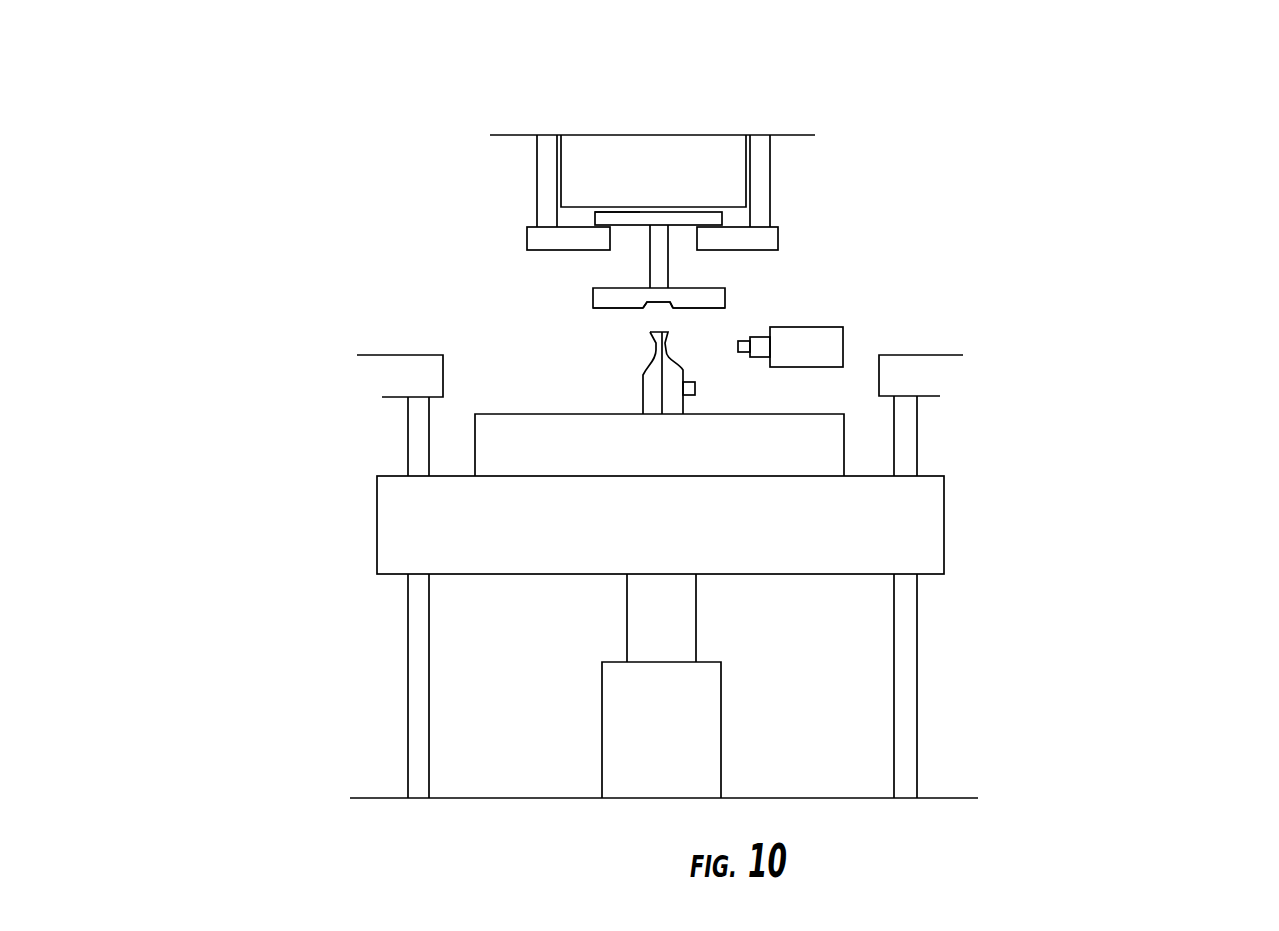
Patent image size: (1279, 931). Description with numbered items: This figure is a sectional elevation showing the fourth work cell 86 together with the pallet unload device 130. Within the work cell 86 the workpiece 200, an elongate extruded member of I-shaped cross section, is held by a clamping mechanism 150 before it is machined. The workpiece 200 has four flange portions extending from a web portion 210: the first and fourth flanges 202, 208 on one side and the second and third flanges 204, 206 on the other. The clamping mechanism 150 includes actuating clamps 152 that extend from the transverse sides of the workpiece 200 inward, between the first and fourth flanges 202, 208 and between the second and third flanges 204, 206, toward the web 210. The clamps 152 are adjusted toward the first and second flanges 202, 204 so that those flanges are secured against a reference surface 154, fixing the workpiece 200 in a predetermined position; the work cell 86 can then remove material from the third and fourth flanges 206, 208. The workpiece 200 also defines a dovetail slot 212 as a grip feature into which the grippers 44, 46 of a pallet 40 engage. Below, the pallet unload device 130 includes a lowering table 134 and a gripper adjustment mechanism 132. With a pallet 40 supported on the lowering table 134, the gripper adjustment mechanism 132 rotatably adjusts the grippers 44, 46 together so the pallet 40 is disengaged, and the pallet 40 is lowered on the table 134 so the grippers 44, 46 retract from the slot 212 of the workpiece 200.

The fourth work cell 86 is at (1186, 141).
The clamping mechanism 150 is at (635, 203).
The actuating clamps 152 is at (528, 240).
The reference surface 154 is at (728, 200).
The first flange portion 202 is at (683, 216).
The second flange portion 204 is at (607, 212).
The web portion 210 is at (662, 252).
The workpiece 200 is at (593, 300).
The third flange portion 206 is at (605, 302).
The fourth flange portion 208 is at (718, 302).
The dovetail slot 212 is at (655, 314).
The gripper adjustment mechanism 132 is at (823, 327).
The gripper 44 is at (720, 373).
The gripper 46 is at (677, 369).
The pallet 40 is at (820, 453).
The pallet unload device 130 is at (642, 576).
The lowering table 134 is at (927, 540).